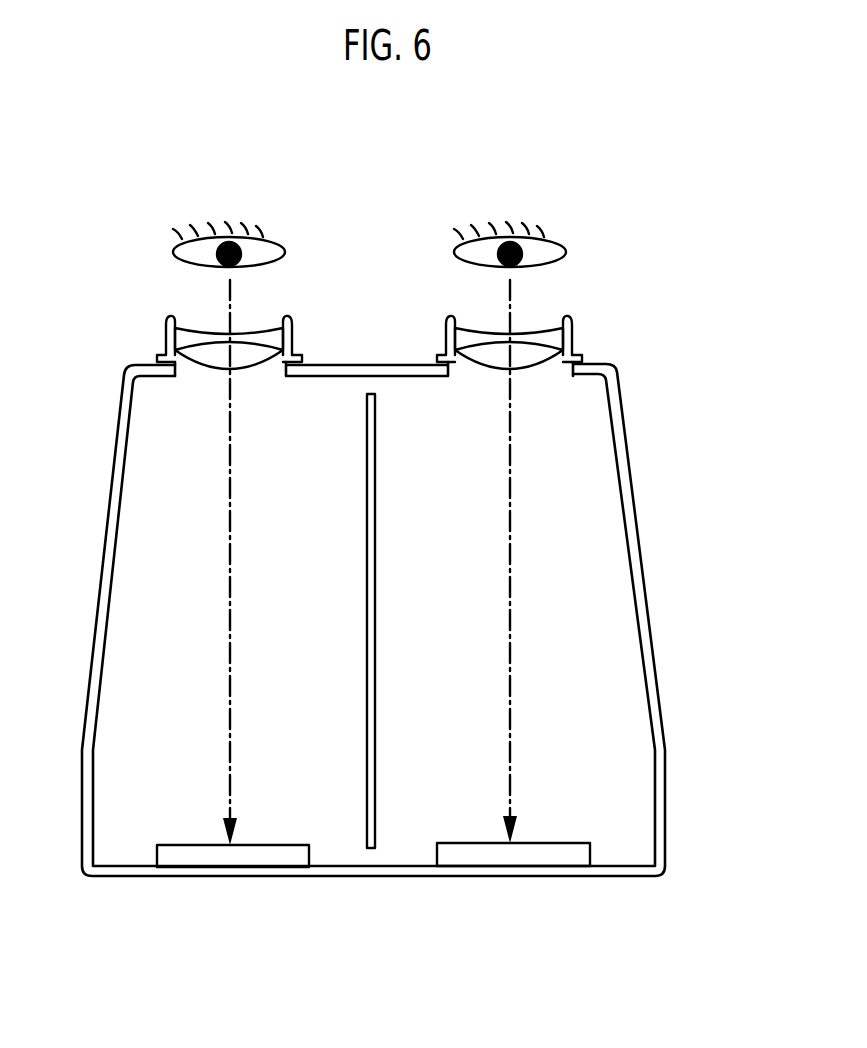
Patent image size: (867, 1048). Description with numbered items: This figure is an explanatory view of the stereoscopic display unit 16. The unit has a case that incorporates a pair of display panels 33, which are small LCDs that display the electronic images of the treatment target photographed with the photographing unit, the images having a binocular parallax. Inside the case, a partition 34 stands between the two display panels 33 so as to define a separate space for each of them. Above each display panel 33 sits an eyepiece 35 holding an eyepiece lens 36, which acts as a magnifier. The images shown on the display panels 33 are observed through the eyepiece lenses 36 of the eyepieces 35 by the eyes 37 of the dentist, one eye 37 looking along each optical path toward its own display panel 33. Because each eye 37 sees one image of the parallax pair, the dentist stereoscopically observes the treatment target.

The stereoscopic display unit 16 is at (667, 470).
The display panel 33 is at (270, 845).
The partition 34 is at (375, 602).
The eyepiece 35 is at (166, 348).
The eyepiece lens 36 is at (247, 368).
The eye 37 is at (284, 245).